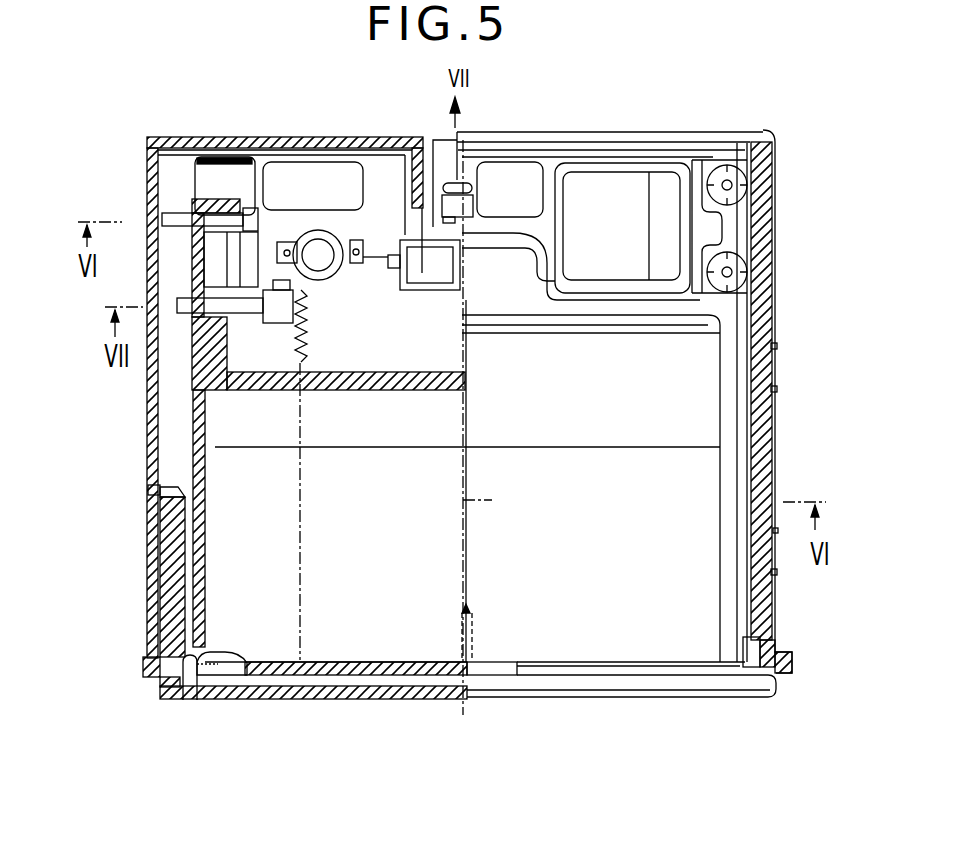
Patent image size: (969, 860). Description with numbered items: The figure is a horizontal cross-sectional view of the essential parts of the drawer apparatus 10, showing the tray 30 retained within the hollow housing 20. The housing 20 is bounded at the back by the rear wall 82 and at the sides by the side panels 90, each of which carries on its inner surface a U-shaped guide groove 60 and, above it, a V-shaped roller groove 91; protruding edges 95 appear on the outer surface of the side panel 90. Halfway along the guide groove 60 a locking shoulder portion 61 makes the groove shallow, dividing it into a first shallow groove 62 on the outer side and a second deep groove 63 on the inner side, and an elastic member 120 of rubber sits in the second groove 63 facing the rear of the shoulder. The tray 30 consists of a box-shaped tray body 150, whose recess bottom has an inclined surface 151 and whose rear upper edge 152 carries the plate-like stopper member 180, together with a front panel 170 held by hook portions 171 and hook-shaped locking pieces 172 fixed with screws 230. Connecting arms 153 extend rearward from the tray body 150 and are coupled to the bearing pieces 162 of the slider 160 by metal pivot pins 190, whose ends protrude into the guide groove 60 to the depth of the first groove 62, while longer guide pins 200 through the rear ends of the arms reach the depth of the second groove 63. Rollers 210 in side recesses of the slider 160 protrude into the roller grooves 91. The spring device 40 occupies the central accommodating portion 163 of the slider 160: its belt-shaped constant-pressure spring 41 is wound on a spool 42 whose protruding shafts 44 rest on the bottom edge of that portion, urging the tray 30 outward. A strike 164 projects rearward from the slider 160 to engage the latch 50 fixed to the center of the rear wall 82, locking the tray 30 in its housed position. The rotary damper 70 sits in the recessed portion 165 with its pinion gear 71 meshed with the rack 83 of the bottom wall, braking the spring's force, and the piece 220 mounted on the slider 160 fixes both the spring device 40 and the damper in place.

The drawer apparatus 10 is at (630, 124).
The hollow housing 20 is at (738, 130).
The tray 30 is at (512, 697).
The constant-pressure spring (spring device) 40 is at (412, 238).
The constant-pressure spring 41 is at (445, 268).
The spool 42 is at (412, 291).
The protruding shafts 44 is at (393, 275).
The latch 50 is at (443, 143).
The guide groove 60 is at (173, 395).
The locking shoulder portion 61 is at (170, 497).
The first shallow groove 62 is at (183, 552).
The second deep groove 63 is at (173, 452).
The rotary damper 70 is at (305, 228).
The pinion gear 71 is at (347, 282).
The rear wall 82 is at (592, 137).
The rack 83 is at (307, 337).
The side panel 90 is at (767, 623).
The roller groove 91 is at (750, 470).
The protruding edges 95 is at (777, 346).
The elastic member 120 is at (158, 486).
The tray body 150 is at (650, 650).
The inclined surface 151 is at (700, 400).
The upper edge 152 is at (715, 318).
The connecting arms 153 is at (198, 202).
The slider 160 is at (347, 163).
The bearing pieces 162 is at (245, 287).
The accommodating portion 163 is at (458, 297).
The strike 164 is at (462, 185).
The recessed portion 165 is at (325, 215).
The front panel 170 is at (590, 683).
The hook portions 171 is at (712, 670).
The locking pieces 172 is at (223, 676).
The stopper member 180 is at (715, 332).
The pivot pins 190 is at (188, 320).
The guide pins 200 is at (180, 213).
The rollers 210 is at (745, 188).
The piece 220 is at (615, 260).
The screws 230 is at (185, 700).